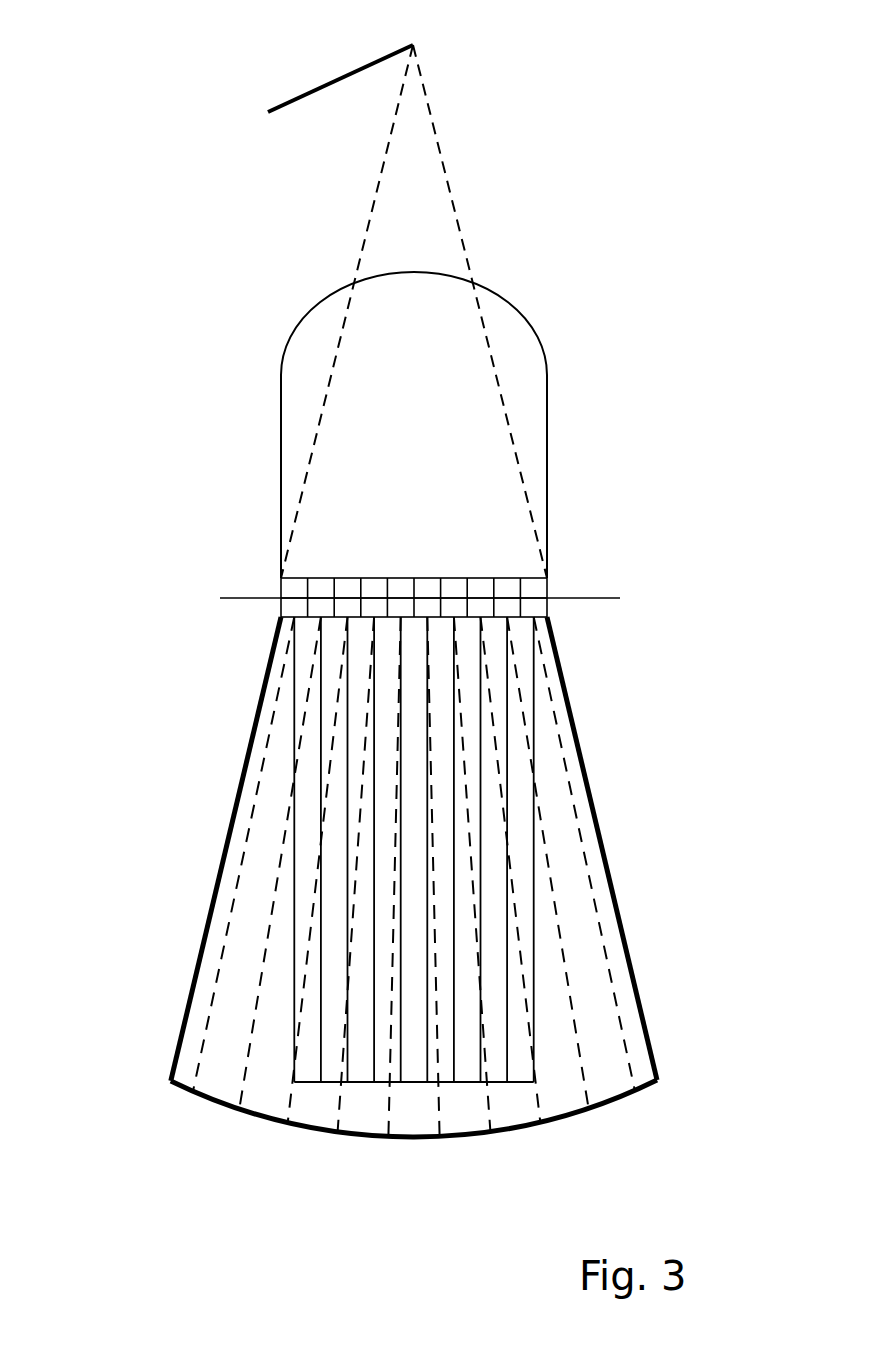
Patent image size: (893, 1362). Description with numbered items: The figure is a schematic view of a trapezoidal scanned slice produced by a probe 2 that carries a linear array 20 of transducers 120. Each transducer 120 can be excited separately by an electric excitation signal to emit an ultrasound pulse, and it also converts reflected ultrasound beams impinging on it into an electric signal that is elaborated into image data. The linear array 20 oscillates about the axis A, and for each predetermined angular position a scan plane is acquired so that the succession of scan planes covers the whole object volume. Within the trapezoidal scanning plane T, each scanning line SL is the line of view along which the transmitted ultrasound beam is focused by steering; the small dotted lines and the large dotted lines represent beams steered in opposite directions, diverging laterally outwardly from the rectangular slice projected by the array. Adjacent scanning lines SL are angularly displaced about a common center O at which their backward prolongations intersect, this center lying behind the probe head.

The probe 2 is at (552, 321).
The linear array 20 is at (268, 591).
The transducers 120 is at (414, 311).
The virtual origin point O is at (323, 100).
The axis of oscillation A is at (447, 599).
The scanning line SL is at (268, 977).
The trapezoidal scanning plane T is at (632, 866).